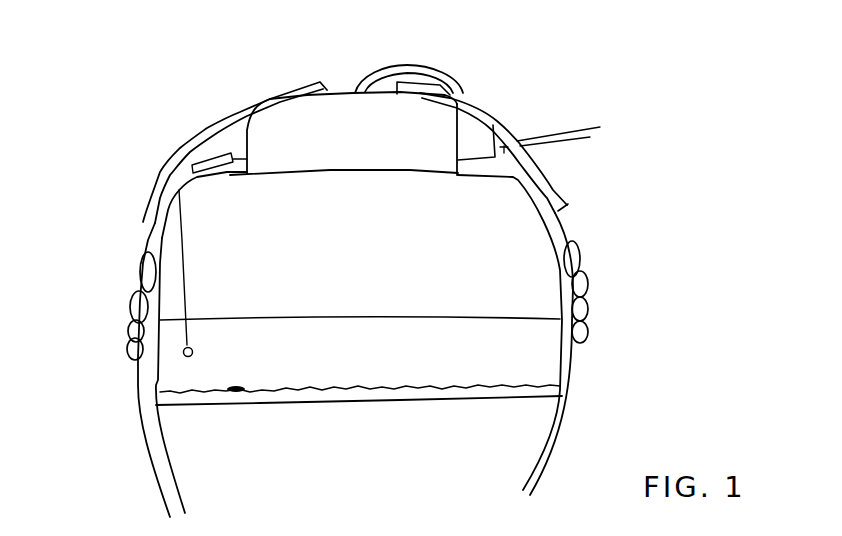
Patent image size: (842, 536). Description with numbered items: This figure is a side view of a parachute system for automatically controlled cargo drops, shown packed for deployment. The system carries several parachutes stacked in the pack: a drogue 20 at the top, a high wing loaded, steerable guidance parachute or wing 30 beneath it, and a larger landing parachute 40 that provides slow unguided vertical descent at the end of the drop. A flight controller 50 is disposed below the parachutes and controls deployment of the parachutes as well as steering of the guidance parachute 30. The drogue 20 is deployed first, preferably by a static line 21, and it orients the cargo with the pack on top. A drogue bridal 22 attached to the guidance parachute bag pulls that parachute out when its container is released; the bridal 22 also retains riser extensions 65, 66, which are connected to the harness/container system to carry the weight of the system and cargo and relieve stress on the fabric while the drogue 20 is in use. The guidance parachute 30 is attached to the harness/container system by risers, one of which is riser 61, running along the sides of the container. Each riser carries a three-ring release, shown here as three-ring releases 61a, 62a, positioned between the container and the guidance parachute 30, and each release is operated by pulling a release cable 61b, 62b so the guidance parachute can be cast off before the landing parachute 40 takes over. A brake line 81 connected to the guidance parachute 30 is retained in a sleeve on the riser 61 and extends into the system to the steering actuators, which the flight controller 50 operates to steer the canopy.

The drogue 20 is at (480, 146).
The static line 21 is at (570, 140).
The drogue bridal 22 is at (432, 64).
The guidance parachute 30 is at (366, 148).
The landing parachute 40 is at (368, 254).
The flight controller 50 is at (350, 361).
The riser 61 is at (141, 420).
The 3-ring release 61a is at (130, 303).
The release cable 61b is at (128, 357).
The 3-ring release 62a is at (590, 288).
The release cable 62b is at (588, 341).
The riser extension 65 is at (202, 128).
The riser extension 66 is at (502, 121).
The brake line 81 is at (181, 272).